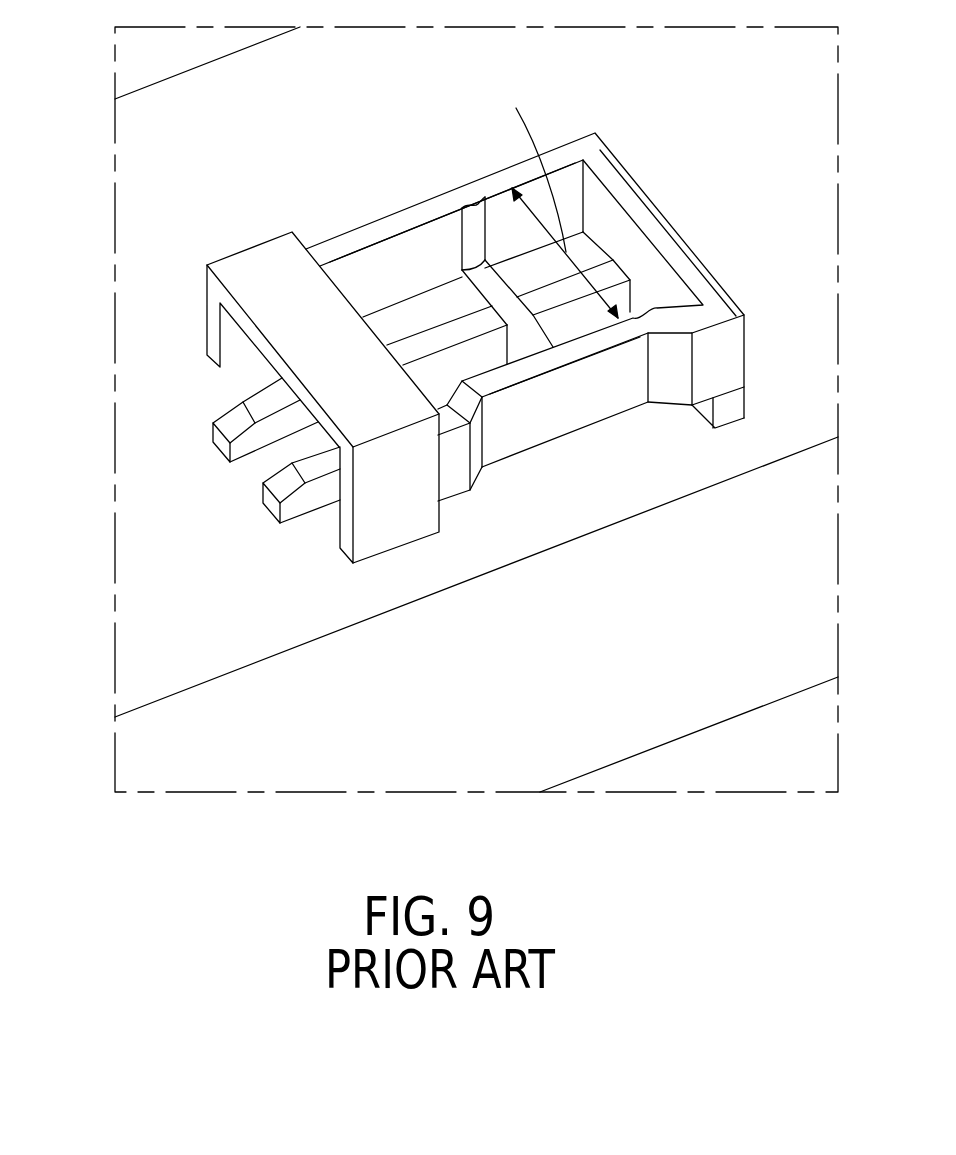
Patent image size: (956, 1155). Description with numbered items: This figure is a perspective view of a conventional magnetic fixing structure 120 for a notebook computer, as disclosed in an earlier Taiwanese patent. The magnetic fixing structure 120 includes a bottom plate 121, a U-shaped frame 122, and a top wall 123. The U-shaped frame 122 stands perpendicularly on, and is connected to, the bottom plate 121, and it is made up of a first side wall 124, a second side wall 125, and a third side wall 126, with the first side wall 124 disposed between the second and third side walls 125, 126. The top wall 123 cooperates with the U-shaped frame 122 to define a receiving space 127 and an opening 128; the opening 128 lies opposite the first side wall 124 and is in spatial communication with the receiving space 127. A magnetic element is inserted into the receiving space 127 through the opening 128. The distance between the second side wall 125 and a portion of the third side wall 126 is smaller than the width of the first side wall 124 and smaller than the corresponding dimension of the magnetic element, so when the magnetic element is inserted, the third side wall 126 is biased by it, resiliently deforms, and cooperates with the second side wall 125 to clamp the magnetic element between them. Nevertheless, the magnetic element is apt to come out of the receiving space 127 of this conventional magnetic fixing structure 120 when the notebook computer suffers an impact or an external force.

The magnetic fixing structure 120 is at (203, 238).
The bottom plate 121 is at (195, 645).
The U-shaped frame 122 is at (556, 295).
The top wall 123 is at (265, 278).
The first side wall 124 is at (672, 246).
The second side wall 125 is at (438, 207).
The third side wall 126 is at (567, 353).
The receiving space 127 is at (430, 340).
The opening 128 is at (245, 376).